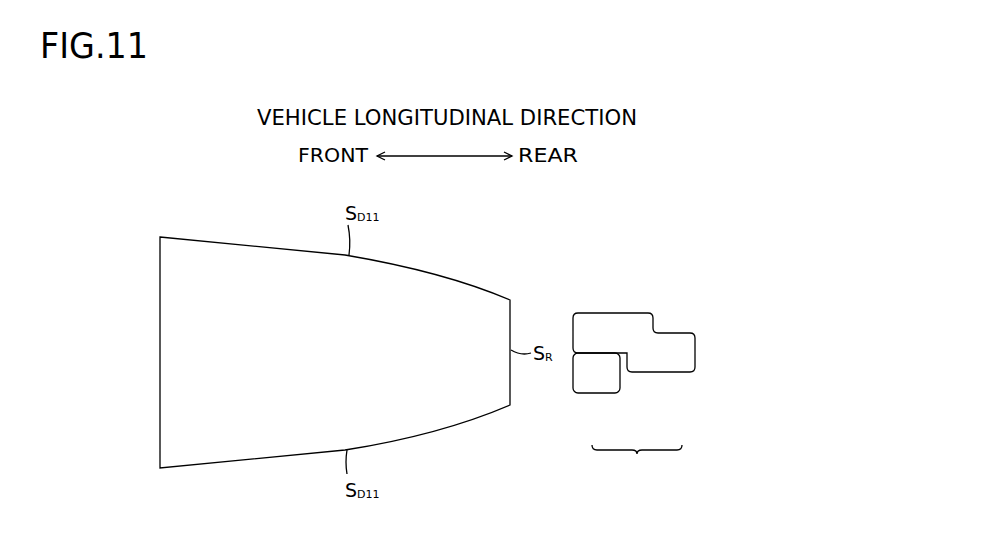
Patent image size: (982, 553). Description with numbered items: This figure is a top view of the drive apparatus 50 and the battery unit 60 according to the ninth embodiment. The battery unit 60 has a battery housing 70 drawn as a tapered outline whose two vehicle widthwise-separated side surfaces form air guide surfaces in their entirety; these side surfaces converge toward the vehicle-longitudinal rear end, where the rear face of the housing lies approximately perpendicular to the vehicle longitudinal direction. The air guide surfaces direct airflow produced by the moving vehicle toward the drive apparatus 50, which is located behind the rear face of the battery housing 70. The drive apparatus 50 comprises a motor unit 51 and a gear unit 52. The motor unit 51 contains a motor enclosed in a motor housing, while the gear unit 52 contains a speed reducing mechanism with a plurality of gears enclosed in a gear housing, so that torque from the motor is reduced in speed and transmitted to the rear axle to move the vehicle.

The battery housing 70 is at (335, 334).
The battery unit 60 is at (240, 268).
The drive apparatus 50 is at (637, 462).
The motor unit 51 is at (593, 383).
The gear unit 52 is at (672, 358).